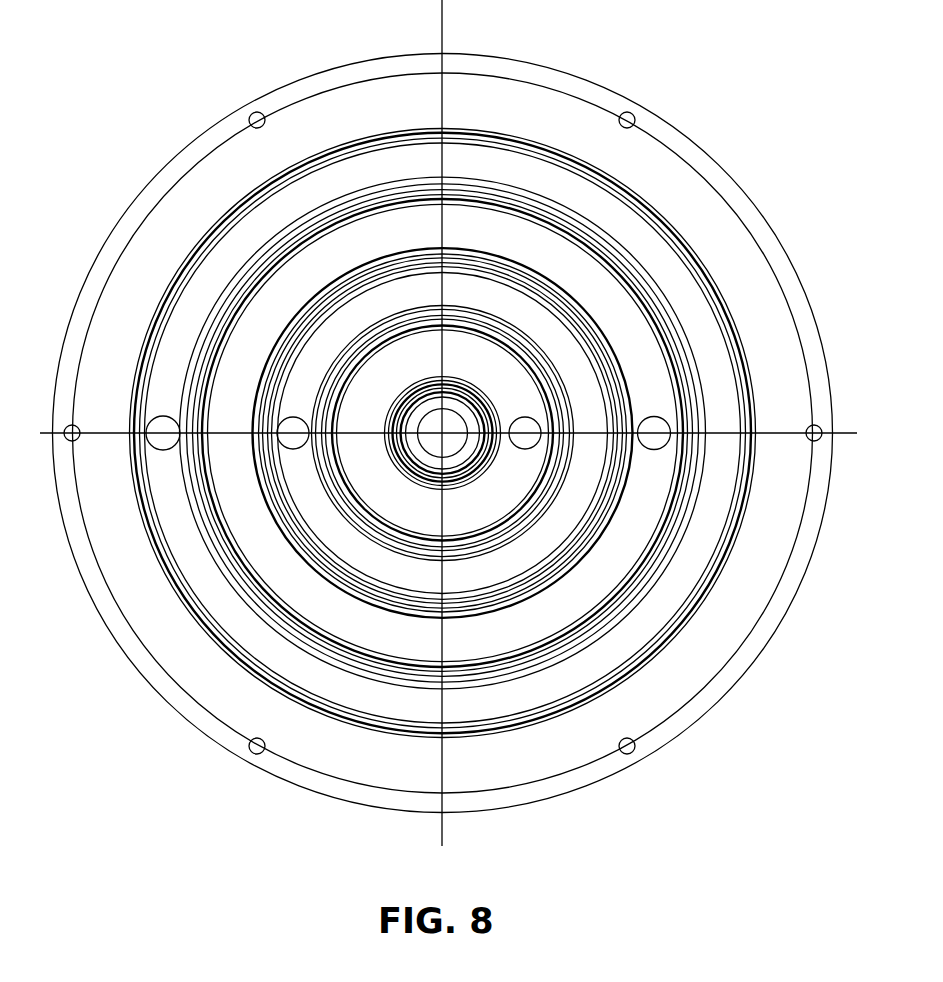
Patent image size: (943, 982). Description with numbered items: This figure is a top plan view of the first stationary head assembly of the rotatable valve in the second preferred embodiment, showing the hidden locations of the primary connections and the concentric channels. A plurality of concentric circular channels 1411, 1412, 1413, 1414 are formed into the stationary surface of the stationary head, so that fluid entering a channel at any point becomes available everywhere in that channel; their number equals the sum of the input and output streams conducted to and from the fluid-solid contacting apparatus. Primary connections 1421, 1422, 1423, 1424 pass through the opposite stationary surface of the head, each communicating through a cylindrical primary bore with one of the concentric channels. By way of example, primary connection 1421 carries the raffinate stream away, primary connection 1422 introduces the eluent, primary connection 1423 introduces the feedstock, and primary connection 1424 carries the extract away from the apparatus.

The concentric circular channel 1411 is at (660, 277).
The concentric circular channel 1412 is at (593, 295).
The concentric circular channel 1413 is at (528, 325).
The concentric circular channel 1414 is at (453, 357).
The primary connection 1421 is at (660, 452).
The primary connection 1422 is at (105, 557).
The primary connection 1423 is at (193, 577).
The primary connection 1424 is at (524, 452).